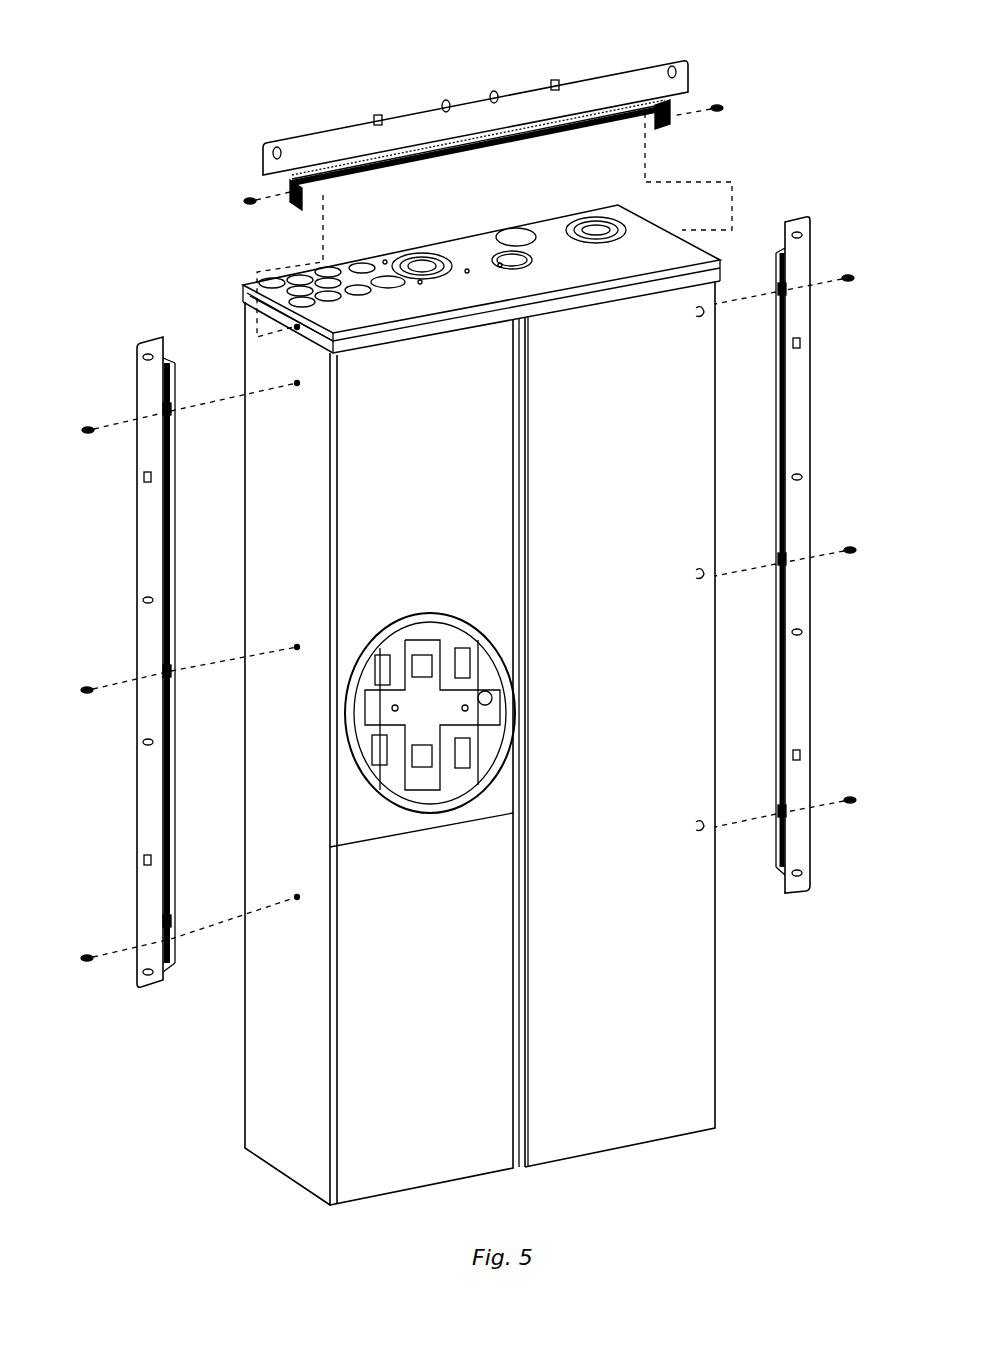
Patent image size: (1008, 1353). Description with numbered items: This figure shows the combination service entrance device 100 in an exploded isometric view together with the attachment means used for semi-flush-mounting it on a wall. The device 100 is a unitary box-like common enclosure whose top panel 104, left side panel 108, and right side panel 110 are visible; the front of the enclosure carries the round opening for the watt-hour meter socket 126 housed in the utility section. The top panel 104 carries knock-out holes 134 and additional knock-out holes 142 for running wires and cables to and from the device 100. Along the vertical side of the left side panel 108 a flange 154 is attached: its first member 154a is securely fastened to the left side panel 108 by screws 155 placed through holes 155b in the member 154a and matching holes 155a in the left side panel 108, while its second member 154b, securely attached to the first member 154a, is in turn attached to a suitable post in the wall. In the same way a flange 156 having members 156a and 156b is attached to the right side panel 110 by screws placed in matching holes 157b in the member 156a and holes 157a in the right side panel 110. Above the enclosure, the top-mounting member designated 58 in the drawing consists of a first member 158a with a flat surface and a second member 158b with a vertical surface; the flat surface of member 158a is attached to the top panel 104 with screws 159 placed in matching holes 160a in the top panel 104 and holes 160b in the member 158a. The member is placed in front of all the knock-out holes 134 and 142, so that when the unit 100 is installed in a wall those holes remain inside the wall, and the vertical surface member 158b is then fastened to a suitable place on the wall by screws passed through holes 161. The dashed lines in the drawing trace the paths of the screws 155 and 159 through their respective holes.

The top mounting bracket assembly 58 is at (343, 78).
The combination device 100 is at (790, 105).
The top panel 104 is at (584, 269).
The left side panel 108 is at (306, 1072).
The right side panel 110 is at (718, 1020).
The watt-hour meter socket 126 is at (385, 808).
The knock-out holes 134 is at (445, 268).
The knock-out holes 142 is at (512, 235).
The flange 154 is at (135, 525).
The member 154a is at (177, 570).
The second member 154b is at (148, 640).
The screws 155 is at (88, 428).
The holes 155a is at (297, 386).
The holes 155b is at (170, 408).
The flange 156 is at (815, 428).
The member 156a is at (778, 712).
The member 156b is at (800, 672).
The holes 157a is at (700, 316).
The holes 157b is at (778, 300).
The first member 158a is at (560, 140).
The second member 158b is at (606, 85).
The screws 159 is at (248, 200).
The holes 160a is at (297, 326).
The holes 160b is at (295, 200).
The holes 161 is at (277, 147).